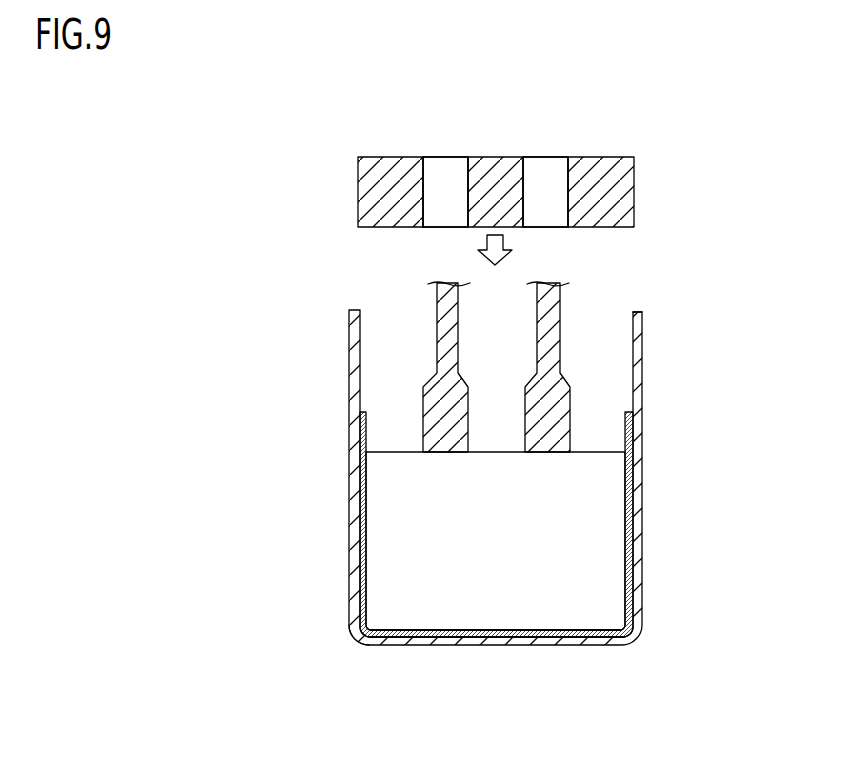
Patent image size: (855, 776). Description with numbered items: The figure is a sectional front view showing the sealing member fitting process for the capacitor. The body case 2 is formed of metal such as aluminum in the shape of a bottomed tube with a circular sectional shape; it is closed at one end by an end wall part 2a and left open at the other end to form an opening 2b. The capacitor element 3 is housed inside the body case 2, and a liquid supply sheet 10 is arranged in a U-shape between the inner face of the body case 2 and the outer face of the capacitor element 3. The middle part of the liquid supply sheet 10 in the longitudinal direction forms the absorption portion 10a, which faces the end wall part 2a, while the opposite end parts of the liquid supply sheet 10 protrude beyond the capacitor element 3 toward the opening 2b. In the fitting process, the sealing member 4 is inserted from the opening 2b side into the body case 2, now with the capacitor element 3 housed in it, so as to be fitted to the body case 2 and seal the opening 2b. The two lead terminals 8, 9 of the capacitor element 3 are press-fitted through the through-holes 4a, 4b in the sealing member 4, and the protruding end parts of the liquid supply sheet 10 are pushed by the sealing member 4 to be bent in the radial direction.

The body case 2 is at (641, 585).
The end wall part 2a is at (383, 645).
The opening 2b is at (623, 322).
The capacitor element 3 is at (602, 509).
The sealing member 4 is at (635, 196).
The through-hole 4a is at (422, 181).
The through-hole 4b is at (522, 176).
The lead terminal 8 is at (437, 322).
The lead terminal 9 is at (560, 313).
The liquid supply sheet 10 is at (637, 551).
The absorption portion 10a is at (449, 630).